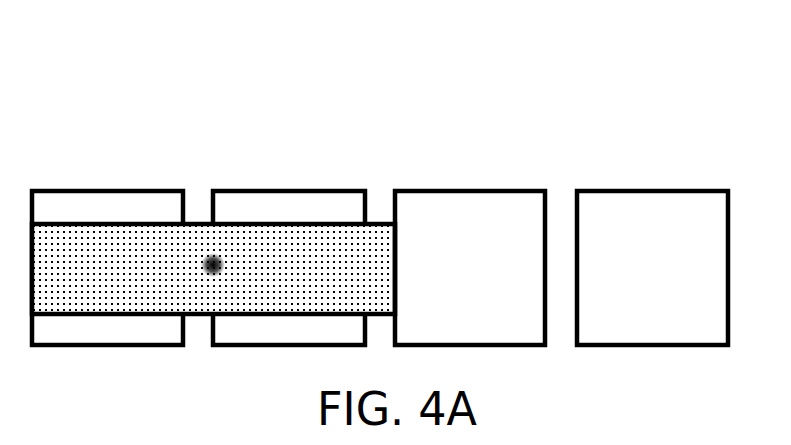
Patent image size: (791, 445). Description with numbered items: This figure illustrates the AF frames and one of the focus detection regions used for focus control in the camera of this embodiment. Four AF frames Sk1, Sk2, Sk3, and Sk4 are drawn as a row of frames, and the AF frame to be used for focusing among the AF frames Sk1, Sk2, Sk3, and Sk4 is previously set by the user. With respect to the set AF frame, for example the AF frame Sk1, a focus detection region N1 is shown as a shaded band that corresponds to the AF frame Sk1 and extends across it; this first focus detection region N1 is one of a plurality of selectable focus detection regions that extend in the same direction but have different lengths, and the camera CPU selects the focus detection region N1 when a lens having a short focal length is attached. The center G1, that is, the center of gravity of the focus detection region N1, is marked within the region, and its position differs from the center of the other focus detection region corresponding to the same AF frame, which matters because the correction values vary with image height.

The AF frame Sk1 is at (107, 191).
The AF frame Sk2 is at (253, 191).
The AF frame Sk3 is at (483, 191).
The AF frame Sk4 is at (628, 191).
The focus detection region N1 is at (298, 243).
The center of the focus detection region N1 G1 is at (210, 268).